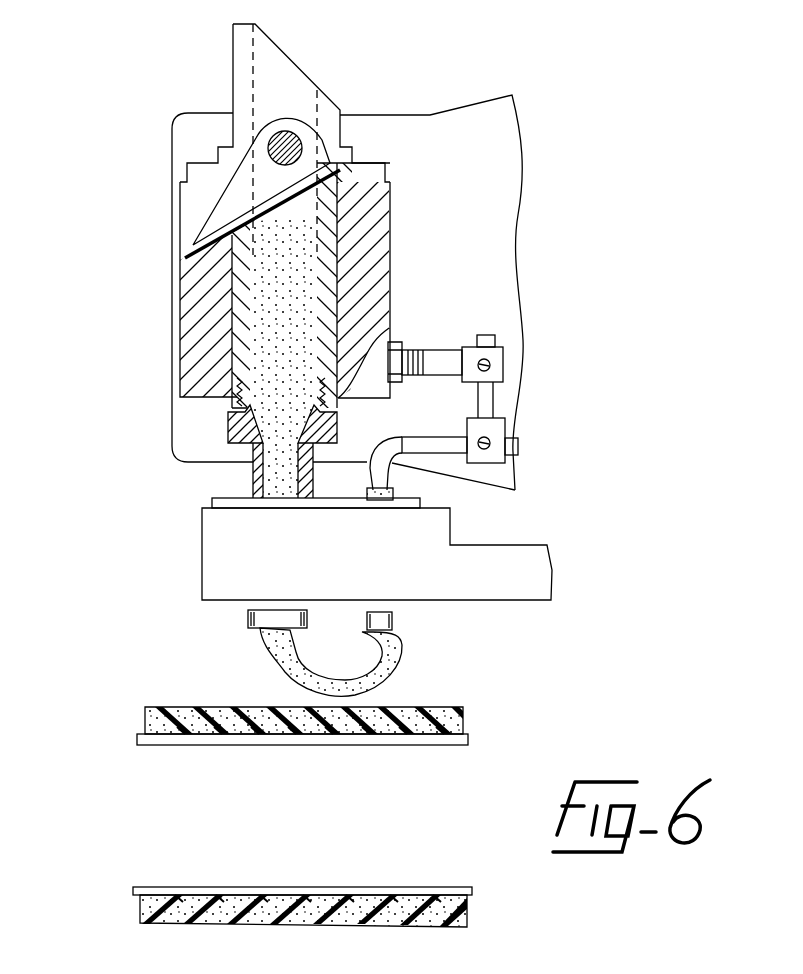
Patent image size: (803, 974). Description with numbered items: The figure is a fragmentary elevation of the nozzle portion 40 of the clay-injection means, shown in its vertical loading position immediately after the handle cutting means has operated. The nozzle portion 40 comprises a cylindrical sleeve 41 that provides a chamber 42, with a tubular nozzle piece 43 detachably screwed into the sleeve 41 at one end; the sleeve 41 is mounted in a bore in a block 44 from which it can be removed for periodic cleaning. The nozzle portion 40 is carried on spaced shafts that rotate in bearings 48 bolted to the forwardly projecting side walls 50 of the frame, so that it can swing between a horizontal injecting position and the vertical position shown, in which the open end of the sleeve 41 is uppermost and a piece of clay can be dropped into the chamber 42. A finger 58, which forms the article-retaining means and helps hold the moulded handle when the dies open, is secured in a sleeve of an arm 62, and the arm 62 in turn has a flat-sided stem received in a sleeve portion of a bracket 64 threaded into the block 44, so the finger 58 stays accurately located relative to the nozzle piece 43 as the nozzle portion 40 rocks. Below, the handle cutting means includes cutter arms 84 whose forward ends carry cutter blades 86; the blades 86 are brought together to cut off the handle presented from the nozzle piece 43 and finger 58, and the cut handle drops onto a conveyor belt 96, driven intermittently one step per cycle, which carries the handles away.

The nozzle portion 40 is at (141, 428).
The cylindrical sleeve 41 is at (237, 358).
The chamber 42 is at (260, 272).
The tubular nozzle piece 43 is at (257, 470).
The block 44 is at (387, 230).
The bearings 48 is at (223, 205).
The side walls 50 is at (485, 167).
The finger 58 is at (442, 447).
The arm 62 is at (488, 405).
The bracket 64 is at (442, 362).
The cutter arms 84 is at (345, 568).
The cutter blades 86 is at (212, 500).
The conveyor belt 96 is at (465, 712).